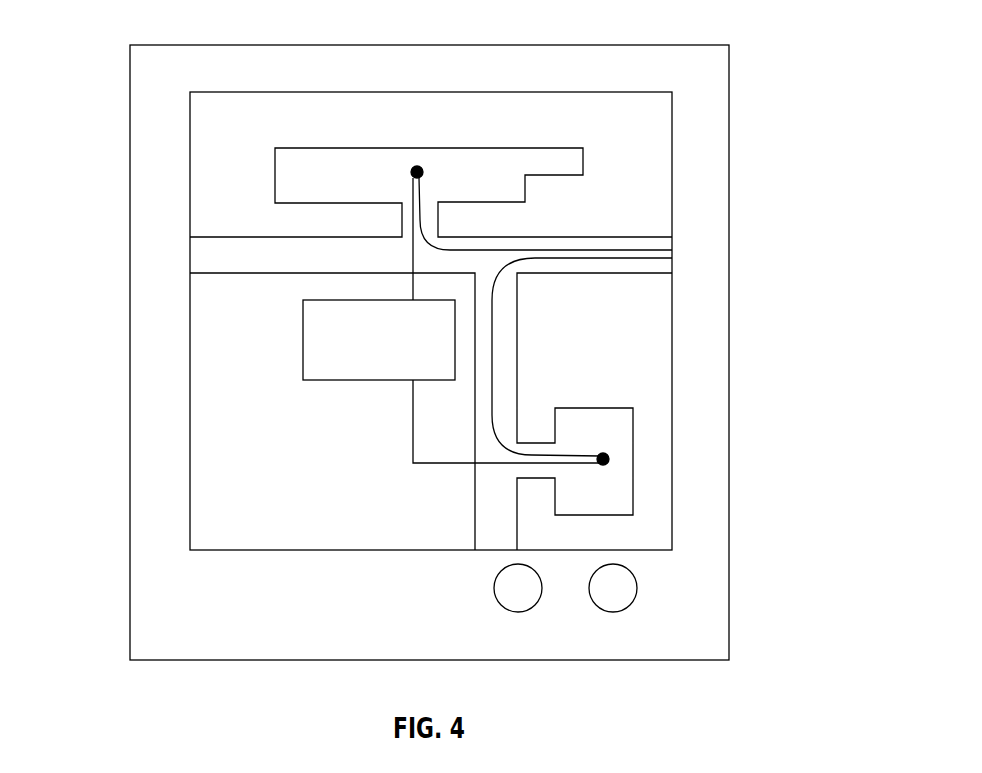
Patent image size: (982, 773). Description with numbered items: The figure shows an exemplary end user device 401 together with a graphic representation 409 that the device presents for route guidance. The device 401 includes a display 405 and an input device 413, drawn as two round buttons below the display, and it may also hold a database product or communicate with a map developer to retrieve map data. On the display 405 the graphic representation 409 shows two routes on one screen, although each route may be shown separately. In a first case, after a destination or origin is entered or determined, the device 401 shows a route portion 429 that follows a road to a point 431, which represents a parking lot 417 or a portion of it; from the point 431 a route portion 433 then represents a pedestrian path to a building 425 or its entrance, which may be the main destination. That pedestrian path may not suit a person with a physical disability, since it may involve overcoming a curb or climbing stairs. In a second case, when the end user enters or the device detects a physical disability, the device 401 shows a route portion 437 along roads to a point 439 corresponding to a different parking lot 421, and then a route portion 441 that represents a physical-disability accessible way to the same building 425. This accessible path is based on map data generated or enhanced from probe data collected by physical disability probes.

The device 401 is at (608, 45).
The display 405 is at (265, 97).
The graphic representation 409 is at (213, 427).
The input device 413 is at (613, 612).
The parking lot 417 is at (548, 162).
The parking lot 421 is at (613, 425).
The building 425 is at (333, 343).
The route portion 429 is at (548, 247).
The point 431 is at (418, 165).
The route portion 433 is at (413, 192).
The route portion 437 is at (493, 293).
The point 439 is at (612, 463).
The route portion 441 is at (413, 400).